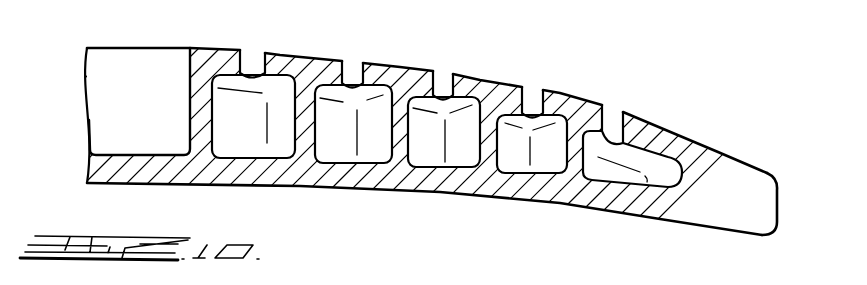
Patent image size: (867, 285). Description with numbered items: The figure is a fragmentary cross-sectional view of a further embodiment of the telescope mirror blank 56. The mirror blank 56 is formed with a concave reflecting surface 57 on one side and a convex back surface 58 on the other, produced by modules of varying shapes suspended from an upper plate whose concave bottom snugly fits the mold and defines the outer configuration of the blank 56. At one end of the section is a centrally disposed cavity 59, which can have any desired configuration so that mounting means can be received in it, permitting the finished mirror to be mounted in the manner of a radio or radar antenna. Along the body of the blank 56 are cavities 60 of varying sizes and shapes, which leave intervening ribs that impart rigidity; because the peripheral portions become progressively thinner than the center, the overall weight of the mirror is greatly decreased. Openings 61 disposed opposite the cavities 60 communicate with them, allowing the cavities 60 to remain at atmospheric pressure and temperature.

The mirror blank 56 is at (720, 147).
The concave reflecting surface 57 is at (588, 207).
The convex back surface 58 is at (566, 92).
The centrally disposed cavity 59 is at (115, 80).
The cavities 60 is at (306, 27).
The openings 61 is at (443, 80).